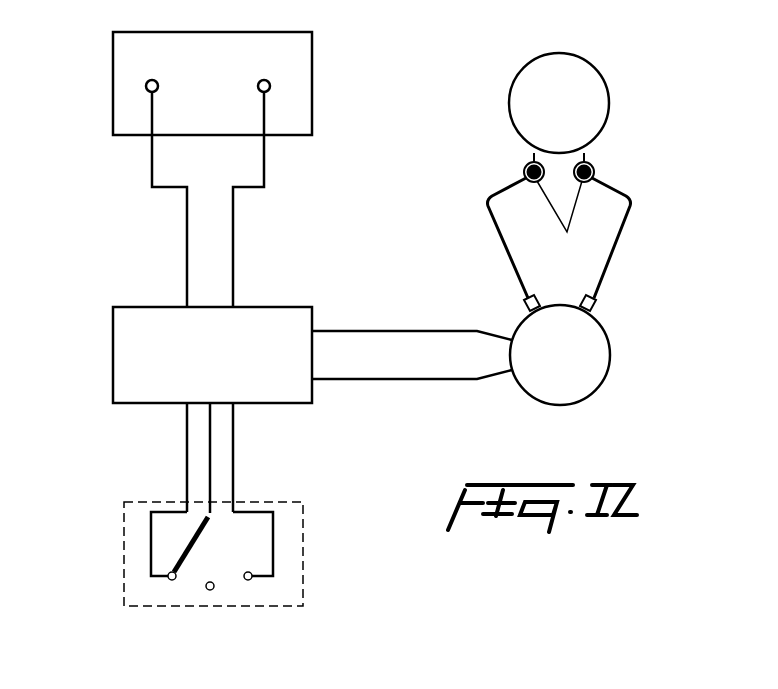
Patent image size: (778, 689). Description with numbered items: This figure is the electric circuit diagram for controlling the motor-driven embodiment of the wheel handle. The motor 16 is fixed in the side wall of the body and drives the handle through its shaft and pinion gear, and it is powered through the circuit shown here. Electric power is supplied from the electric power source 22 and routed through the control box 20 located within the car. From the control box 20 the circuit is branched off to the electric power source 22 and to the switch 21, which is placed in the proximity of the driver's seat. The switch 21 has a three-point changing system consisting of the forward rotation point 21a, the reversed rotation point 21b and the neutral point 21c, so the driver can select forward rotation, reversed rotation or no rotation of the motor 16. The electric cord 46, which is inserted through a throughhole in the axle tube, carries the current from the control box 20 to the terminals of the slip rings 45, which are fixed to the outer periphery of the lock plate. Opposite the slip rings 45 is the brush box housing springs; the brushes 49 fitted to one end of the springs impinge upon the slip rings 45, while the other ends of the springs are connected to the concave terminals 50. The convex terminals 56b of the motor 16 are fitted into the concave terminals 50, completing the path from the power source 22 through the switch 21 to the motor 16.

The motor 16 is at (587, 72).
The control box 20 is at (118, 360).
The switch 21 is at (300, 540).
The forward rotation point 21a is at (250, 581).
The reversed rotation point 21b is at (170, 581).
The neutral point 21c is at (211, 591).
The electric power source 22 is at (303, 38).
The slip rings 45 is at (603, 355).
The electric cord 46 is at (413, 378).
The brushes 49 is at (593, 300).
The concave terminals 50 is at (562, 221).
The convex terminals 56b is at (590, 167).